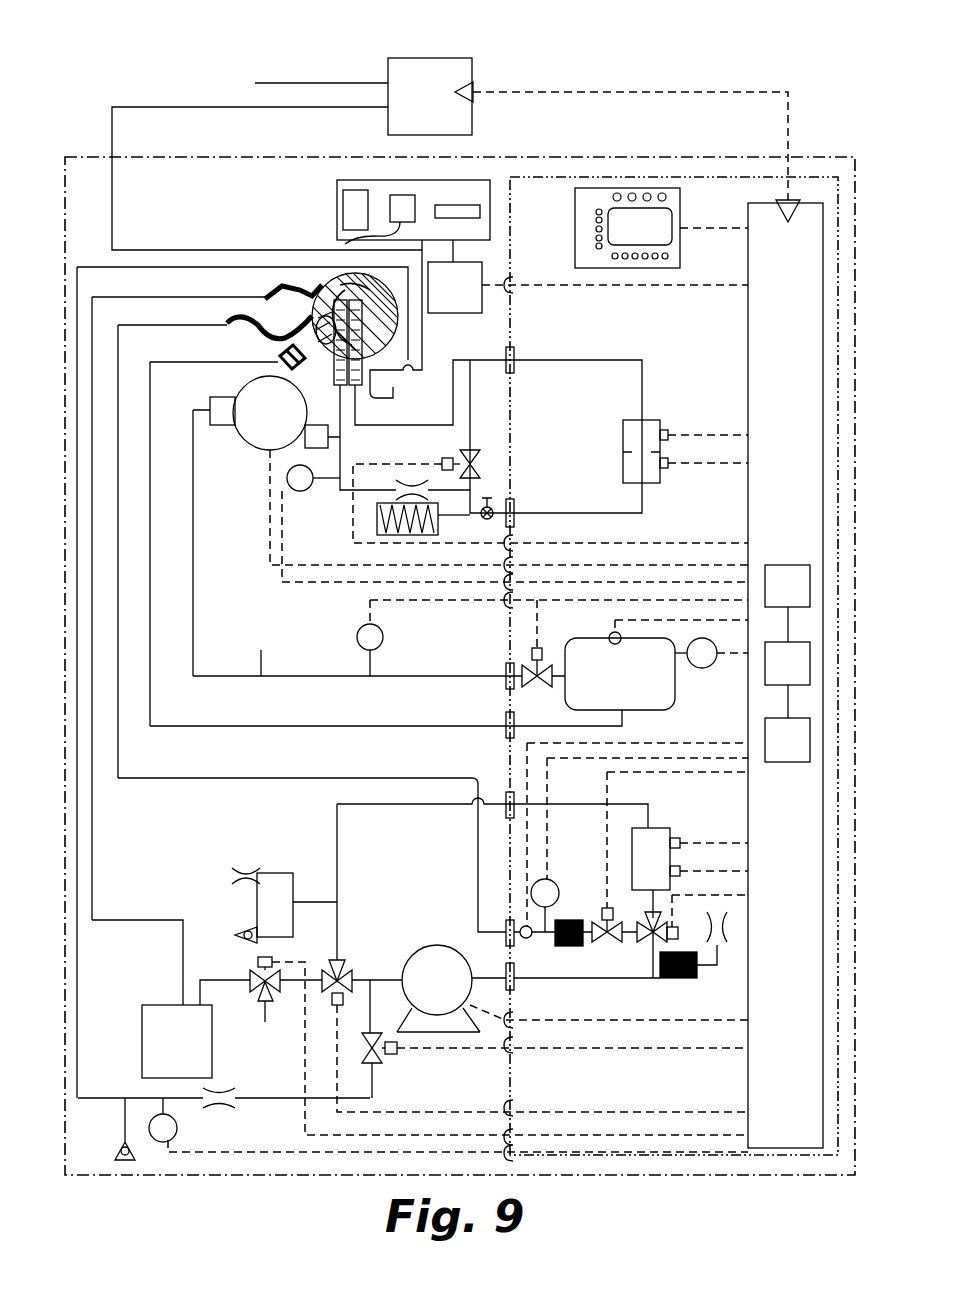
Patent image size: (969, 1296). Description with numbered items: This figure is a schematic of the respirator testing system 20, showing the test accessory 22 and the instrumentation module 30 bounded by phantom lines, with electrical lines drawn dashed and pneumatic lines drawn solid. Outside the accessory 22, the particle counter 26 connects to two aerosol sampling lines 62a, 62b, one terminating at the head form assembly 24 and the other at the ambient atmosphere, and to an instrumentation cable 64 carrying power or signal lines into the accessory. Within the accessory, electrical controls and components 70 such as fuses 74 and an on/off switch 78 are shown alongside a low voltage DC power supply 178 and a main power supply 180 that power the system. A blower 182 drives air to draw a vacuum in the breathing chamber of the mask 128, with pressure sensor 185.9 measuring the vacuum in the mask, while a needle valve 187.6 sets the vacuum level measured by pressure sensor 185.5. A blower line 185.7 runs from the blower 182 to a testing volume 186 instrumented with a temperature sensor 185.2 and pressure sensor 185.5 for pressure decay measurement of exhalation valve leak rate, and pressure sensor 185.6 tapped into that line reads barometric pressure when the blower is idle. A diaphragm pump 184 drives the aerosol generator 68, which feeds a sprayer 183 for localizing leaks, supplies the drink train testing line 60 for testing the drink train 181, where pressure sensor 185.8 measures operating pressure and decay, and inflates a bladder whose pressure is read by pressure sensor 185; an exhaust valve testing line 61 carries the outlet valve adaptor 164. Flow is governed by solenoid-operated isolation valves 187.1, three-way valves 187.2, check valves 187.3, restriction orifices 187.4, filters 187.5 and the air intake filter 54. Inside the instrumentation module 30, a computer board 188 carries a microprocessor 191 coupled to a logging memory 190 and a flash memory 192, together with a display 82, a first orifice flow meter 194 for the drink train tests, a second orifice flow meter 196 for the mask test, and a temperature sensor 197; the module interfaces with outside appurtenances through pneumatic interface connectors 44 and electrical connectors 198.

The respirator testing system 20 is at (122, 55).
The test accessory 22 is at (560, 147).
The head form assembly 24 is at (398, 332).
The particle counter 26 is at (430, 96).
The instrumentation module 30 is at (706, 174).
The instrumentation interface connectors 44 is at (515, 350).
The air intake filter 54 is at (377, 525).
The drink train testing line 60 is at (190, 778).
The exhaust valve testing line 61 is at (190, 726).
The aerosol sampling line 62a is at (232, 107).
The aerosol sampling line 62b is at (310, 83).
The instrumentation cable 64 is at (595, 92).
The aerosol generator 68 is at (224, 1009).
The electrical controls and components 70 is at (334, 182).
The fuses 74 is at (466, 204).
The on/off switch 78 is at (343, 210).
The display and keypad 82 is at (661, 228).
The mask 128 is at (330, 304).
The outlet valve adaptor 164 is at (278, 365).
The low voltage DC power supply 178 is at (345, 244).
The main power supply 180 is at (588, 287).
The drink train 181 is at (250, 338).
The blower 182 is at (470, 518).
The sprayer 183 is at (265, 298).
The diaphragm pump 184 is at (550, 988).
The pressure sensor 185 is at (150, 1145).
The temperature sensor 185.2 is at (610, 633).
The pressure sensor 185.5 is at (712, 663).
The pressure sensor 185.6 is at (358, 628).
The blower line 185.7 is at (194, 606).
The pressure sensor 185.8 is at (553, 882).
The pressure sensor 185.9 is at (287, 485).
The testing volume 186 is at (412, 682).
The solenoid-operated isolation valves 187.1 is at (475, 453).
The 3-way valves 187.2 is at (258, 960).
The check valves 187.3 is at (248, 928).
The restriction orifices 187.4 is at (426, 450).
The filters 187.5 is at (568, 947).
The needle valve 187.6 is at (484, 518).
The computer board 188 is at (785, 675).
The logging memory 190 is at (787, 603).
The microprocessor 191 is at (787, 680).
The flash memory 192 is at (787, 740).
The first orifice flow meter 194 is at (665, 828).
The second orifice flow meter 196 is at (640, 420).
The temperature sensor 197 is at (525, 940).
The electrical connectors 198 is at (514, 282).